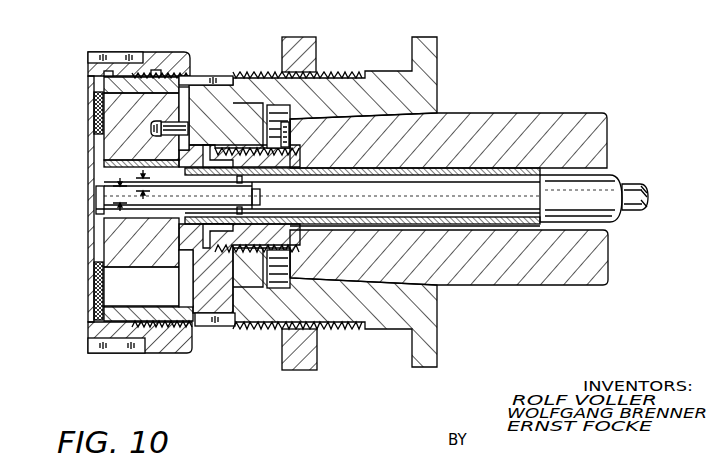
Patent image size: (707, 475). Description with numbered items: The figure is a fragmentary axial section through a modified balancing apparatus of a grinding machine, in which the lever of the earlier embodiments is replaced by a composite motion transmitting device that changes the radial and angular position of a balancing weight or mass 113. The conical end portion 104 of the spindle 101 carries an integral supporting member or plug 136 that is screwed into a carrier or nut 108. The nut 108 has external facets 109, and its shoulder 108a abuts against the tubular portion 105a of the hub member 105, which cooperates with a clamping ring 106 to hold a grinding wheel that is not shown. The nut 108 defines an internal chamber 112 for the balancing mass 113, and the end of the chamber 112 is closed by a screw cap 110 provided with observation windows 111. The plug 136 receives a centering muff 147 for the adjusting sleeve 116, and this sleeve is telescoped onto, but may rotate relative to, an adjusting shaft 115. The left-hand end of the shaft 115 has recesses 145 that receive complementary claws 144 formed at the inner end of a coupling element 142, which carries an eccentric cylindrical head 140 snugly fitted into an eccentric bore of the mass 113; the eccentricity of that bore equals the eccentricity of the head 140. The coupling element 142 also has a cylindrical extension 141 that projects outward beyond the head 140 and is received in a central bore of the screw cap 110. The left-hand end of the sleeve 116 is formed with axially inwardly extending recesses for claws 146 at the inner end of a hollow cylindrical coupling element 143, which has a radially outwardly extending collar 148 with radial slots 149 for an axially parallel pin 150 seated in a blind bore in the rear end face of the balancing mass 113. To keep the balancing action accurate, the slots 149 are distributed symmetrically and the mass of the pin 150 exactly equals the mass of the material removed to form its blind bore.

The spindle 101 is at (552, 275).
The conical end portion 104 is at (450, 112).
The hub member 105 is at (442, 58).
The tubular portion 105a is at (343, 76).
The clamping ring 106 is at (316, 53).
The carrier or nut 108 is at (195, 80).
The shoulder 108a is at (278, 262).
The external facets 109 is at (222, 96).
The screw cap 110 is at (90, 66).
The observation windows 111 is at (93, 112).
The internal chamber 112 is at (110, 295).
The balancing weight or mass 113 is at (113, 143).
The adjusting shaft 115 is at (640, 188).
The adjusting sleeve 116 is at (612, 178).
The supporting member or plug 136 is at (270, 108).
The eccentric cylindrical head 140 is at (112, 166).
The cylindrical extension 141 is at (100, 200).
The coupling element 142 is at (187, 192).
The hollow cylindrical coupling element 143 is at (240, 235).
The claws 144 is at (250, 196).
The recesses 145 is at (262, 190).
The claws 146 is at (283, 322).
The centering muff 147 is at (320, 176).
The collar 148 is at (188, 282).
The radial slots 149 is at (198, 110).
The pin 150 is at (168, 122).